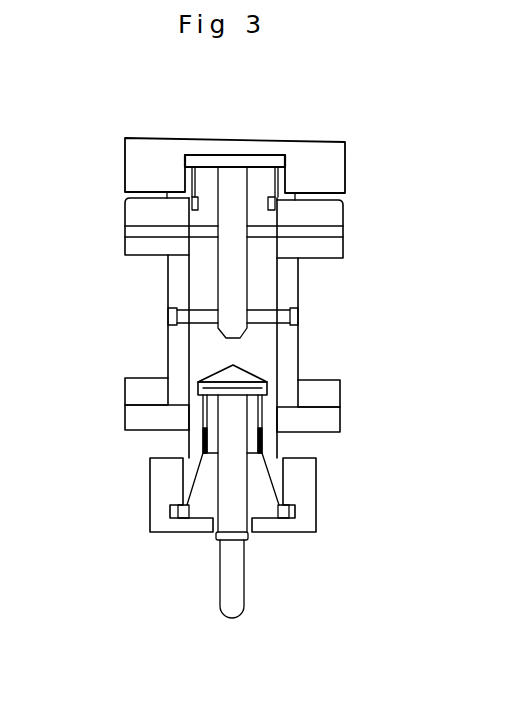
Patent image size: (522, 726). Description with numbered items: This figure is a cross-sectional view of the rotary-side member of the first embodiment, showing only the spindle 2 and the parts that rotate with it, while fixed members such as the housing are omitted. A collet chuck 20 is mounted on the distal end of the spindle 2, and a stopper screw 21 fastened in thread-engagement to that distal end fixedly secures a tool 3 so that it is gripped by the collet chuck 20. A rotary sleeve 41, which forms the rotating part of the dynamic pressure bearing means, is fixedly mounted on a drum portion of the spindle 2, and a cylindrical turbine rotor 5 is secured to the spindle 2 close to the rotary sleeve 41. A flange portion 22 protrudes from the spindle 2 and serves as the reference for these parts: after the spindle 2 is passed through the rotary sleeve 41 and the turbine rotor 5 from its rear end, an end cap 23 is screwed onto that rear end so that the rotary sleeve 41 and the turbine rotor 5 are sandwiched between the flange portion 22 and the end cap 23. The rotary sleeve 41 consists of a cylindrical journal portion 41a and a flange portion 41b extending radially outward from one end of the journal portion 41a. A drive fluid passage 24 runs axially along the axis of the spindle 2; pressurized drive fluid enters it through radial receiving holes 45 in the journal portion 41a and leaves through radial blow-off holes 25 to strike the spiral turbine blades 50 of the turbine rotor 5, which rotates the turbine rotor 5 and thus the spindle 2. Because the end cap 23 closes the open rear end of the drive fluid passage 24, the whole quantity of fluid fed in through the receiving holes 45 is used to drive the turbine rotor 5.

The spindle 2 is at (165, 437).
The tool 3 is at (220, 588).
The turbine rotor 5 is at (345, 243).
The collet chuck 20 is at (262, 508).
The stopper screw 21 is at (306, 497).
The flange portion 22 is at (340, 422).
The end cap 23 is at (347, 148).
The drive fluid passage 24 is at (225, 272).
The blow-off holes 25 is at (207, 218).
The rotary sleeve 41 is at (301, 344).
The journal portion 41a is at (177, 356).
The flange portion 41b is at (340, 392).
The receiving holes 45 is at (170, 318).
The turbine blades 50 is at (147, 226).